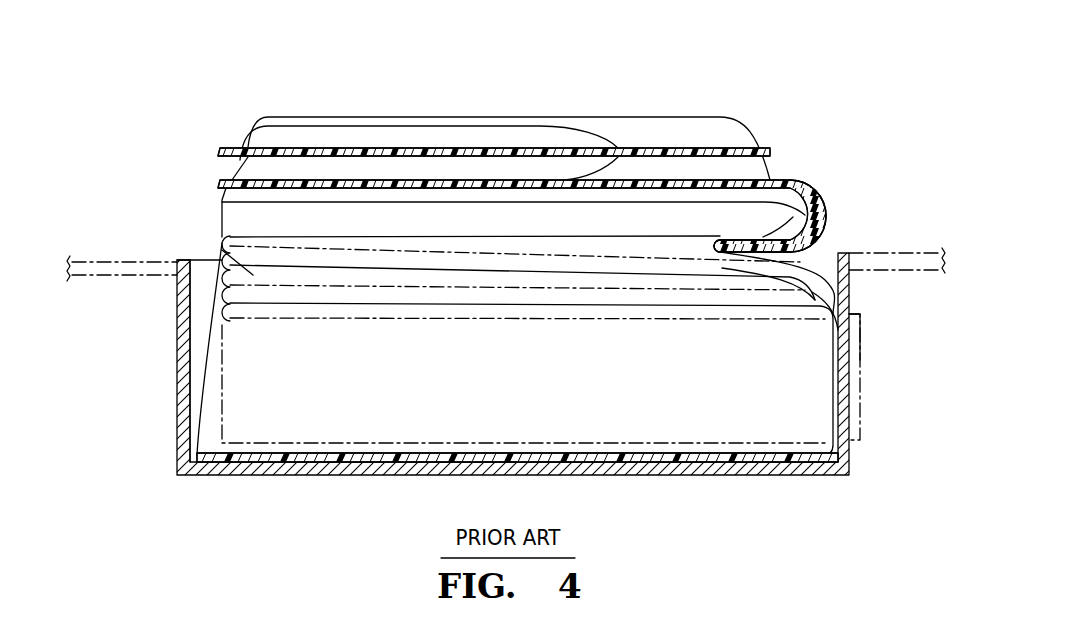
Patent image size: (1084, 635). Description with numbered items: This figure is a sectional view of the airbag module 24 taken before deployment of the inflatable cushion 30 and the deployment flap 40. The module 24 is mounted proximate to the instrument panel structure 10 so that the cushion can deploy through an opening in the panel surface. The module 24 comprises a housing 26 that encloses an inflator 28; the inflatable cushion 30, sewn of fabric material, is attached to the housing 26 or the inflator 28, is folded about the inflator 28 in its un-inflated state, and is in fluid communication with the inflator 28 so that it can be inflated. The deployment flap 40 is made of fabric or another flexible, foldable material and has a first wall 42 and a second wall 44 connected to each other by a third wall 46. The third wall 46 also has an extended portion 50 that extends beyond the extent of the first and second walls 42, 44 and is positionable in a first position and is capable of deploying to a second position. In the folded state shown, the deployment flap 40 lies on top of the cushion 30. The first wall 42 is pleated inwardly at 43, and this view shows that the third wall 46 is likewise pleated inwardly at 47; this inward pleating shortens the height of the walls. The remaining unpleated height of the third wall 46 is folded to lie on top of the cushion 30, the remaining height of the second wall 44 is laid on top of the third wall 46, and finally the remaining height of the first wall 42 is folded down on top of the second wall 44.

The instrument panel structure 10 is at (149, 257).
The airbag module 24 is at (178, 431).
The housing 26 is at (177, 350).
The inflator 28 is at (860, 418).
The inflatable cushion 30 is at (220, 250).
The deployment flap 40 is at (552, 138).
The first wall 42 is at (415, 117).
The inward pleat of first wall 43 is at (658, 202).
The second wall 44 is at (505, 148).
The third wall 46 is at (825, 228).
The inward pleat of third wall 47 is at (716, 250).
The extended portion 50 is at (218, 183).